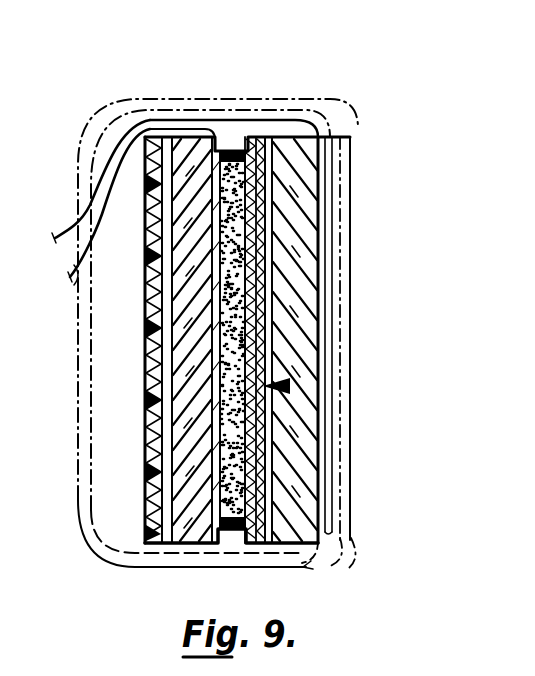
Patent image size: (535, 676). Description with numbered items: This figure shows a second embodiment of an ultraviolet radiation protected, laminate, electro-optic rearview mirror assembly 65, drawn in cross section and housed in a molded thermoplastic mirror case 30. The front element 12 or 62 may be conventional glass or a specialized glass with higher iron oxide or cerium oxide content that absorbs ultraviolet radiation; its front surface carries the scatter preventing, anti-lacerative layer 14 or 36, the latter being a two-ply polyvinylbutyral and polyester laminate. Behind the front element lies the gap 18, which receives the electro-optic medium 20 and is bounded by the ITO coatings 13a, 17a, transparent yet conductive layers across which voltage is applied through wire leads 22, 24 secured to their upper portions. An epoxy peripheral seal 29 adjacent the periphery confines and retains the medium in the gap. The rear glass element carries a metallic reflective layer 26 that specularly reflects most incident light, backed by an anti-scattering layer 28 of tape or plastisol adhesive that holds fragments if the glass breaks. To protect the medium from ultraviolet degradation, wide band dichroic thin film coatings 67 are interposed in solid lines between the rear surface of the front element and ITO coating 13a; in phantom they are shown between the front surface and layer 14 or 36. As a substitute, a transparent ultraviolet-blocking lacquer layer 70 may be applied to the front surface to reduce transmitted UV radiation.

The electrochemical cell assembly 65 is at (328, 73).
The front glass element 62 is at (0, 440).
The mirror case 30 is at (318, 575).
The wire lead 22 is at (67, 244).
The anti-scattering layer 28 is at (150, 373).
The reflective layer 26 is at (168, 342).
The wire lead 24 is at (206, 286).
The ITO layer 17a is at (214, 298).
The peripheral seal 29 is at (233, 150).
The ITO layer 13a is at (225, 493).
The gap 18 is at (218, 468).
The electro-optic medium 20 is at (246, 449).
The thin film coating 67 is at (290, 386).
The front element 12 is at (302, 235).
The coated layer 14 is at (344, 172).
The UV radiation reducing layer 36 is at (397, 335).
The layer 70 is at (352, 309).